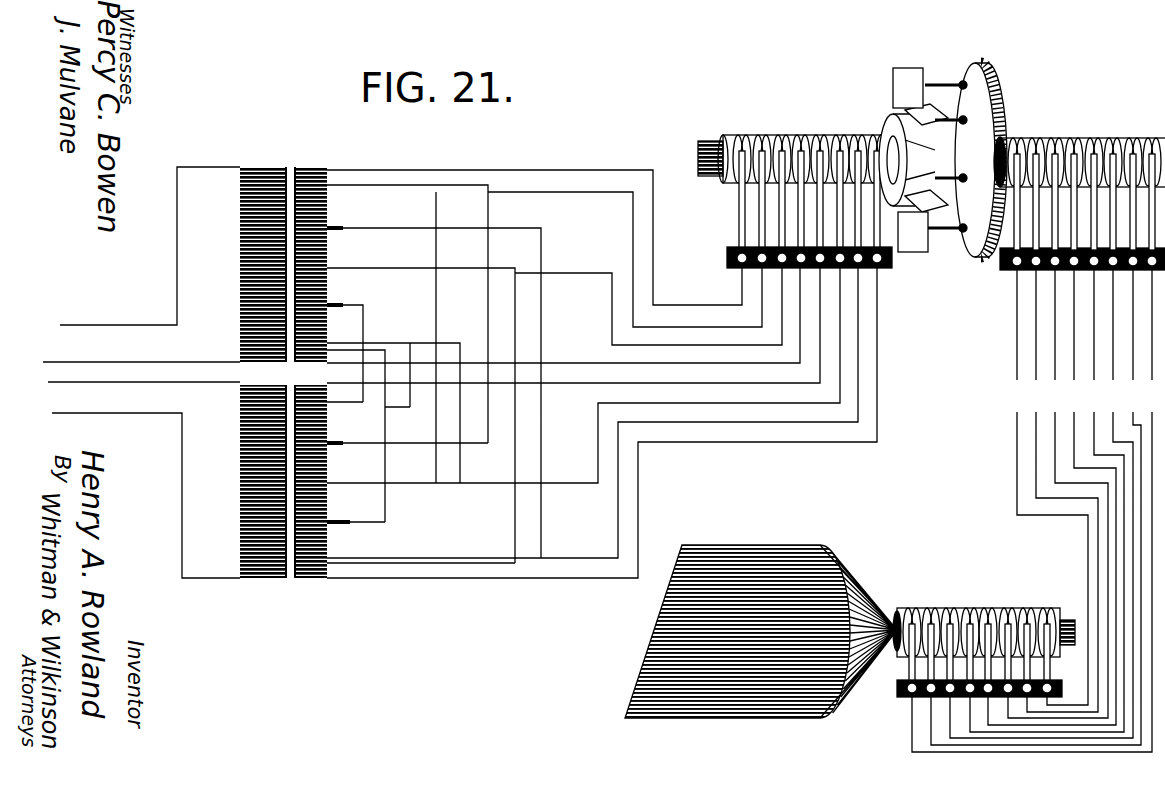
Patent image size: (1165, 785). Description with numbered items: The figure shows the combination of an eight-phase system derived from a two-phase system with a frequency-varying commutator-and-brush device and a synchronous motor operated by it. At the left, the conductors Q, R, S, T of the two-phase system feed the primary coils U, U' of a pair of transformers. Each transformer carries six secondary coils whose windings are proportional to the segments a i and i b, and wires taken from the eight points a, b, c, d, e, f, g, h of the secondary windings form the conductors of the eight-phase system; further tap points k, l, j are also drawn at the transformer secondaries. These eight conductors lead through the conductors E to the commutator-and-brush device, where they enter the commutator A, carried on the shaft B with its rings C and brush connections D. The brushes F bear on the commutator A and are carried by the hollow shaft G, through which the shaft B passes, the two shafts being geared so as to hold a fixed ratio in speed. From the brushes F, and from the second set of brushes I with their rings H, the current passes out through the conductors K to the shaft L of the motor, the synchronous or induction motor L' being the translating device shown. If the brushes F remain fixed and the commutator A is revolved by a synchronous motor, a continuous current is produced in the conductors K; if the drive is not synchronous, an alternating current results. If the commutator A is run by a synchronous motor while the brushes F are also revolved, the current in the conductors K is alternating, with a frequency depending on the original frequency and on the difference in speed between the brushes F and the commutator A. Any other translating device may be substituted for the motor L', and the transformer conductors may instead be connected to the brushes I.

The secondary-winding tap point a is at (340, 160).
The secondary-winding segment point i is at (333, 178).
The secondary-winding tap point b is at (338, 478).
The secondary-winding tap point d is at (336, 554).
The secondary-winding tap point h is at (338, 406).
The secondary-winding tap point f is at (336, 488).
The terminal k is at (352, 355).
The secondary-winding tap point e is at (330, 355).
The secondary-winding tap point g is at (327, 378).
The terminal l is at (345, 398).
The terminal j is at (330, 572).
The secondary-winding tap point c is at (327, 580).
The primary coil U is at (266, 264).
The primary coil U' is at (263, 481).
The conductor of the two-phase system Q is at (135, 256).
The conductor of the two-phase system R is at (131, 356).
The conductor of the two-phase system S is at (131, 381).
The conductor of the two-phase system T is at (136, 485).
The shaft B is at (705, 148).
The commutator rings C is at (812, 136).
The commutator A is at (893, 134).
The brushes D is at (795, 216).
The brushes F is at (915, 240).
The conductors E is at (860, 329).
The commutator rings H is at (1094, 138).
The shaft G is at (1164, 134).
The brushes I is at (1070, 232).
The conductors K is at (1053, 328).
The shaft of a motor or other translating device L is at (986, 633).
The synchronous or induction motor L' is at (760, 611).